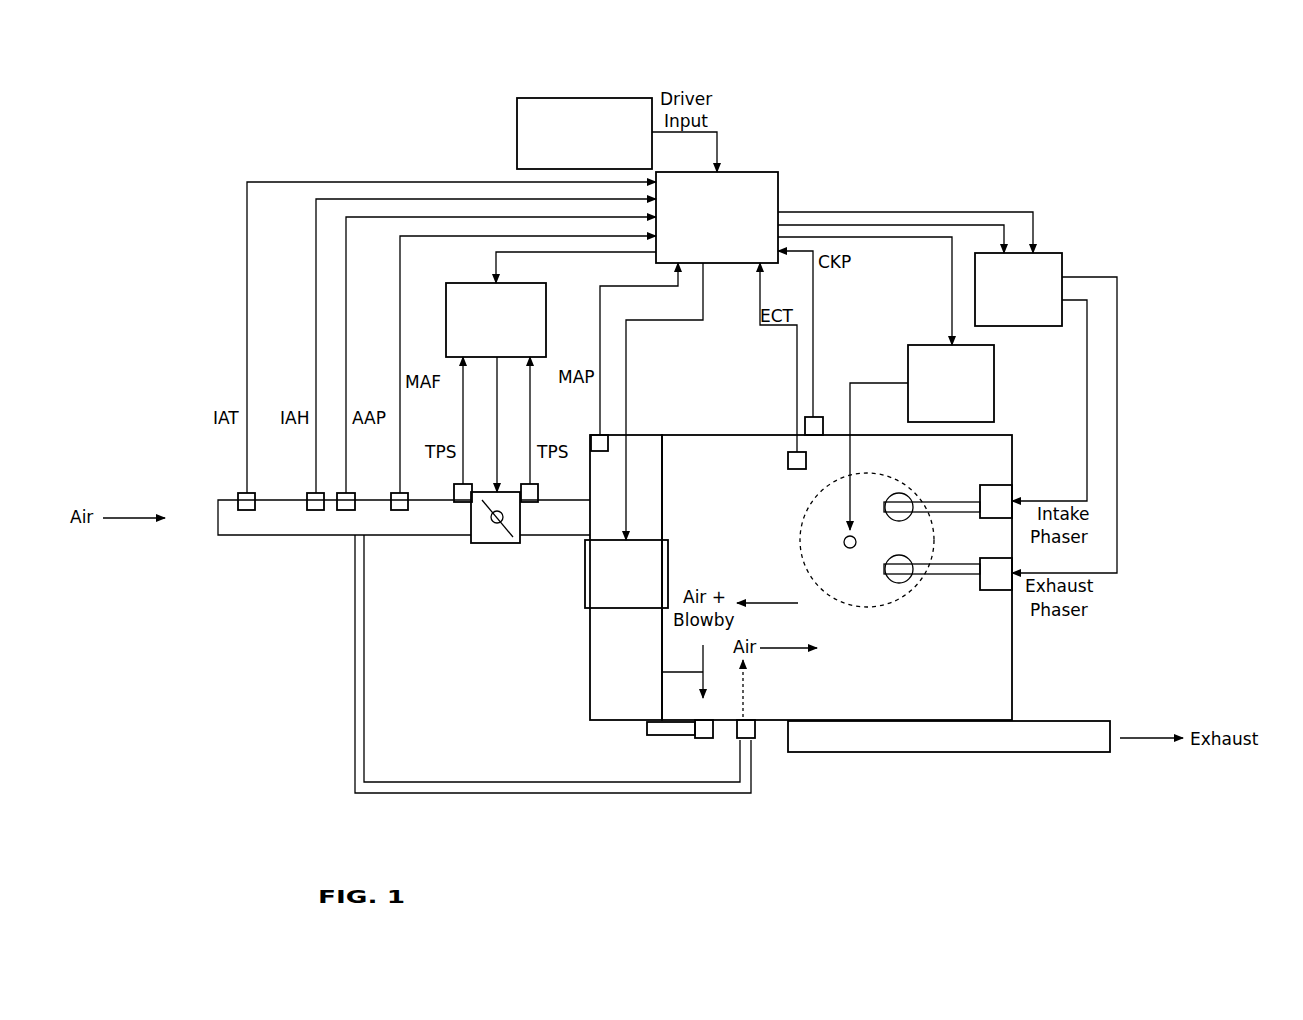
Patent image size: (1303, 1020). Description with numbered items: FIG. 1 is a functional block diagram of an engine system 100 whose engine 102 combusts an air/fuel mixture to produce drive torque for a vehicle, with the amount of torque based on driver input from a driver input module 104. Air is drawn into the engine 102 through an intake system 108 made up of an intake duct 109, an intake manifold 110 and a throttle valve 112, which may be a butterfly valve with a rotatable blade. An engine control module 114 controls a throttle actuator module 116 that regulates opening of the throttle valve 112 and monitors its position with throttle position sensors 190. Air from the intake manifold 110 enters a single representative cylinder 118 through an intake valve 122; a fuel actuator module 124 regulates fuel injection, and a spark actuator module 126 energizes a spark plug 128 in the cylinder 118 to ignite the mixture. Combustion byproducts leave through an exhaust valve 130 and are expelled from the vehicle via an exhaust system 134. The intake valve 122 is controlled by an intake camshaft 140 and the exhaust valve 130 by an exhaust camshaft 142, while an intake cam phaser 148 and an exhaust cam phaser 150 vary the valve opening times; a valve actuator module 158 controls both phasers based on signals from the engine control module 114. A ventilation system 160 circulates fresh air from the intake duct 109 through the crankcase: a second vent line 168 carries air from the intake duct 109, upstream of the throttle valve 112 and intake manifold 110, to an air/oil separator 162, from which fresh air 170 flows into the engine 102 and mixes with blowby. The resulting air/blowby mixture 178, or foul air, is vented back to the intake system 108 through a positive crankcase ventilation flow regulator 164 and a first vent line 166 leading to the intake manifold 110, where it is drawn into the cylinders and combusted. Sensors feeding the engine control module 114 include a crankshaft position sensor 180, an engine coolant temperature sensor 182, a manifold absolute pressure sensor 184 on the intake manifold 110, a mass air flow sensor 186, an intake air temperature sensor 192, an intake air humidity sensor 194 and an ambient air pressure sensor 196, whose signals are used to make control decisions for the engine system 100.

The engine system 100 is at (196, 75).
The engine 102 is at (1012, 446).
The driver input module 104 is at (517, 125).
The intake system 108 is at (458, 608).
The intake duct 109 is at (318, 537).
The intake manifold 110 is at (590, 657).
The throttle valve 112 is at (490, 545).
The engine control module 114 is at (780, 175).
The throttle actuator module 116 is at (458, 283).
The cylinder 118 is at (828, 600).
The intake valve 122 is at (905, 494).
The fuel actuator module 124 is at (640, 610).
The spark actuator module 126 is at (994, 383).
The spark plug 128 is at (845, 545).
The exhaust valve 130 is at (895, 590).
The exhaust system 134 is at (1082, 753).
The intake camshaft 140 is at (955, 502).
The exhaust camshaft 142 is at (958, 575).
The intake cam phaser 148 is at (1000, 485).
The exhaust cam phaser 150 is at (1000, 590).
The valve actuator module 158 is at (1062, 261).
The ventilation system 160 is at (648, 815).
The air/oil separator 162 is at (700, 740).
The positive crankcase ventilation flow regulator 164 is at (747, 740).
The first vent line 166 is at (650, 736).
The second vent line 168 is at (520, 782).
The fresh air 170 is at (745, 700).
The air/blowby mixture 178 is at (662, 672).
The crankshaft position sensor 180 is at (817, 417).
The engine coolant temperature sensor 182 is at (797, 470).
The manifold absolute pressure sensor 184 is at (596, 435).
The mass air flow sensor 186 is at (405, 493).
The throttle position sensor 190 is at (462, 502).
The intake air temperature sensor 192 is at (240, 493).
The intake air humidity sensor 194 is at (310, 493).
The ambient air pressure sensor 196 is at (348, 493).